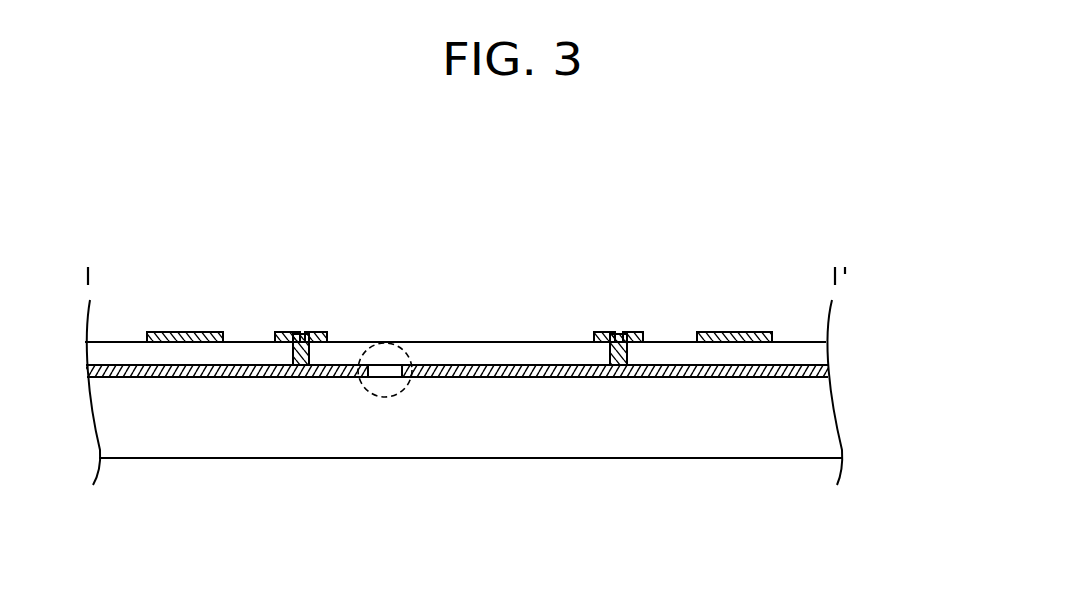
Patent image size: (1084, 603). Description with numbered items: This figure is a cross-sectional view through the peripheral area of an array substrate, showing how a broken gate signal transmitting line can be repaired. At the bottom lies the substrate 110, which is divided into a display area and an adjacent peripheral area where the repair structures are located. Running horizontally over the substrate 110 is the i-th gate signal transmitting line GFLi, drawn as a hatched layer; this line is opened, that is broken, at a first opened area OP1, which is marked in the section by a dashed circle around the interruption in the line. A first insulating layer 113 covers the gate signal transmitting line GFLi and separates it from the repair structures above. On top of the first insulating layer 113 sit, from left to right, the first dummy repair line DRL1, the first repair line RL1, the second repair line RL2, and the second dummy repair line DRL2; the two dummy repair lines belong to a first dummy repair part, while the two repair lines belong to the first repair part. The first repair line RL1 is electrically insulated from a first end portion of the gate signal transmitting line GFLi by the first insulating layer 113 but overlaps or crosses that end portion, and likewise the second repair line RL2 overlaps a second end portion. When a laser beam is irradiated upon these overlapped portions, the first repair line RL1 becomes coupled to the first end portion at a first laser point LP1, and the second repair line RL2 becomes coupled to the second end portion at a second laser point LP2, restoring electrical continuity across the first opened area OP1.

The substrate 110 is at (820, 428).
The first insulating layer 113 is at (822, 350).
The i-th gate signal transmitting line GFLi is at (510, 377).
The first opened area OP1 is at (385, 397).
The first dummy repair line DRL1 is at (178, 342).
The first repair line RL1 is at (297, 377).
The first laser point LP1 is at (300, 326).
The second repair line RL2 is at (620, 377).
The second laser point LP2 is at (619, 326).
The second dummy repair line DRL2 is at (735, 342).